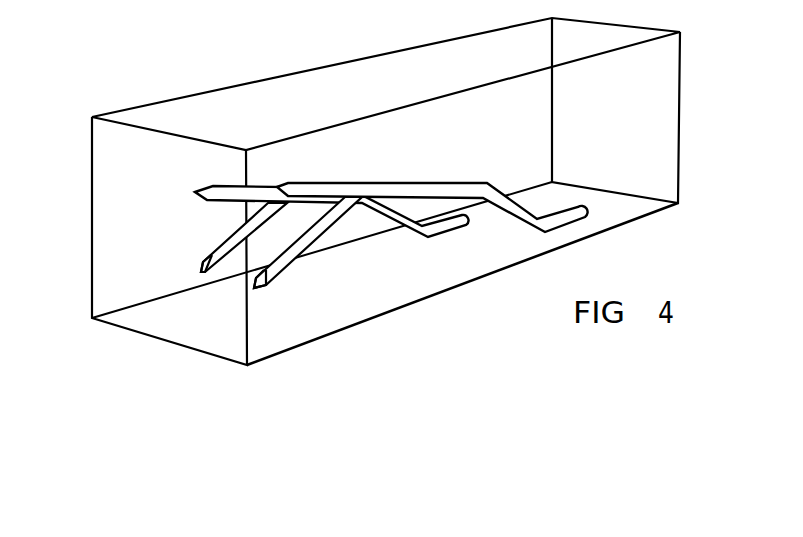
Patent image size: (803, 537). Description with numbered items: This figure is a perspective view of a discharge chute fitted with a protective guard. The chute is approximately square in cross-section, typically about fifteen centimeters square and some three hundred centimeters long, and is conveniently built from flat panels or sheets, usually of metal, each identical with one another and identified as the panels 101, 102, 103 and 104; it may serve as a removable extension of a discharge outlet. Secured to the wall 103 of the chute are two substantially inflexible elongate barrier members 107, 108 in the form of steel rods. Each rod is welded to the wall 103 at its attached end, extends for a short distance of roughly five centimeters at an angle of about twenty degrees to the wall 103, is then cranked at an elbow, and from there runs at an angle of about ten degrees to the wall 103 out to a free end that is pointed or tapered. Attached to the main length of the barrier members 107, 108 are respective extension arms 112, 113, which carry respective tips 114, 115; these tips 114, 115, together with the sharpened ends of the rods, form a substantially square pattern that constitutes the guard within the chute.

The flat panel 101 is at (168, 118).
The flat panel 102 is at (115, 172).
The wall 103 is at (202, 330).
The flat panel 104 is at (655, 60).
The elongate barrier member 107 is at (262, 190).
The elongate barrier member 108 is at (360, 187).
The extension arm 112 is at (228, 243).
The extension arm 113 is at (310, 237).
The tip 114 is at (202, 270).
The tip 115 is at (248, 295).